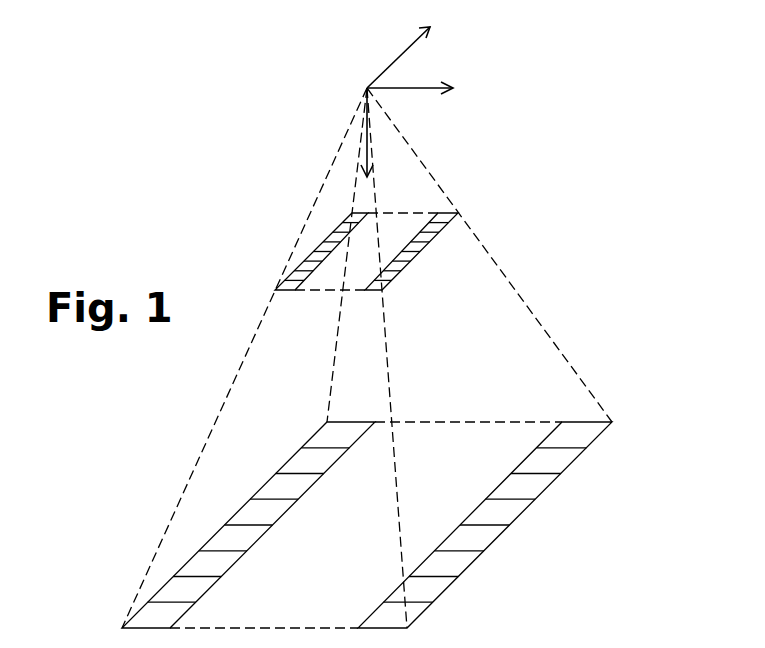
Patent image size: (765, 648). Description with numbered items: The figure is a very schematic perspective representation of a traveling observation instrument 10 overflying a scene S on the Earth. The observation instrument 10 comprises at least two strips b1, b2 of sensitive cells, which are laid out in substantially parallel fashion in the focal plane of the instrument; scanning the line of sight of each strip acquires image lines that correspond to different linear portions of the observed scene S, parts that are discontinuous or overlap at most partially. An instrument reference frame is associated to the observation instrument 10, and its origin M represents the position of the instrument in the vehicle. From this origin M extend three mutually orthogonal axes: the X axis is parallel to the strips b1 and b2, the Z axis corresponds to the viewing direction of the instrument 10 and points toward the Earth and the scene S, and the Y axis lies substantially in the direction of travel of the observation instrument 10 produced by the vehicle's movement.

The observation instrument 10 is at (367, 358).
The observed scene S is at (103, 547).
The origin of the instrument reference frame M is at (365, 88).
The first strip b1 is at (428, 246).
The second strip b2 is at (283, 295).